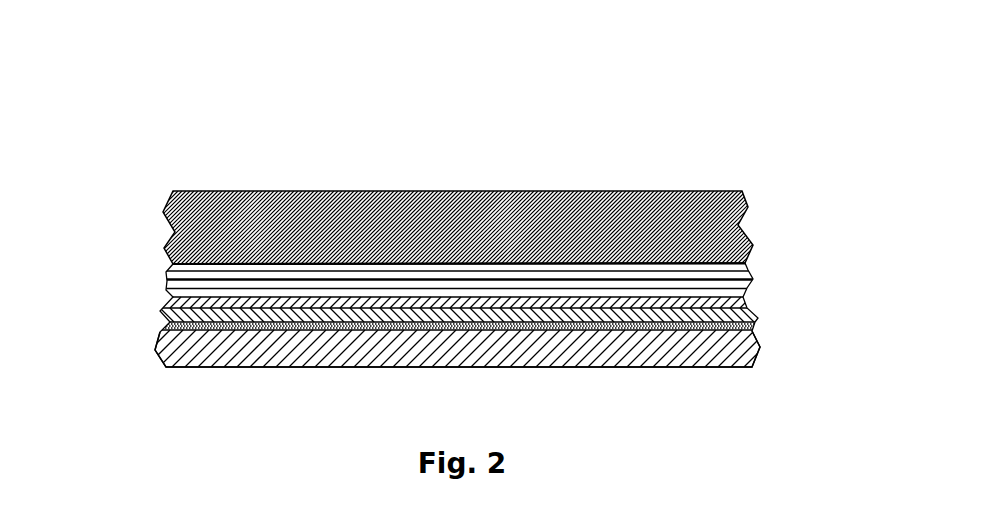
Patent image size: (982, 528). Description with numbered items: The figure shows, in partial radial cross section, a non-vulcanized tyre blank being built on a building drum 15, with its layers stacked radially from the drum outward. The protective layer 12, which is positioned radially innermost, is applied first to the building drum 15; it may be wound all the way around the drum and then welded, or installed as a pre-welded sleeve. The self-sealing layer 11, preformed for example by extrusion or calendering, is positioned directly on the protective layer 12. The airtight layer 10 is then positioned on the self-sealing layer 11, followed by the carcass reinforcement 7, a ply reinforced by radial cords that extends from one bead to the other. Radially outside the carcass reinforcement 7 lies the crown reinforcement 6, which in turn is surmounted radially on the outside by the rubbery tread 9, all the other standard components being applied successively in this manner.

The tread 9 is at (268, 233).
The crown reinforcement 6 is at (710, 279).
The carcass reinforcement 7 is at (233, 289).
The airtight layer 10 is at (170, 304).
The self-sealing layer 11 is at (740, 317).
The protective layer 12 is at (228, 333).
The building drum 15 is at (600, 348).